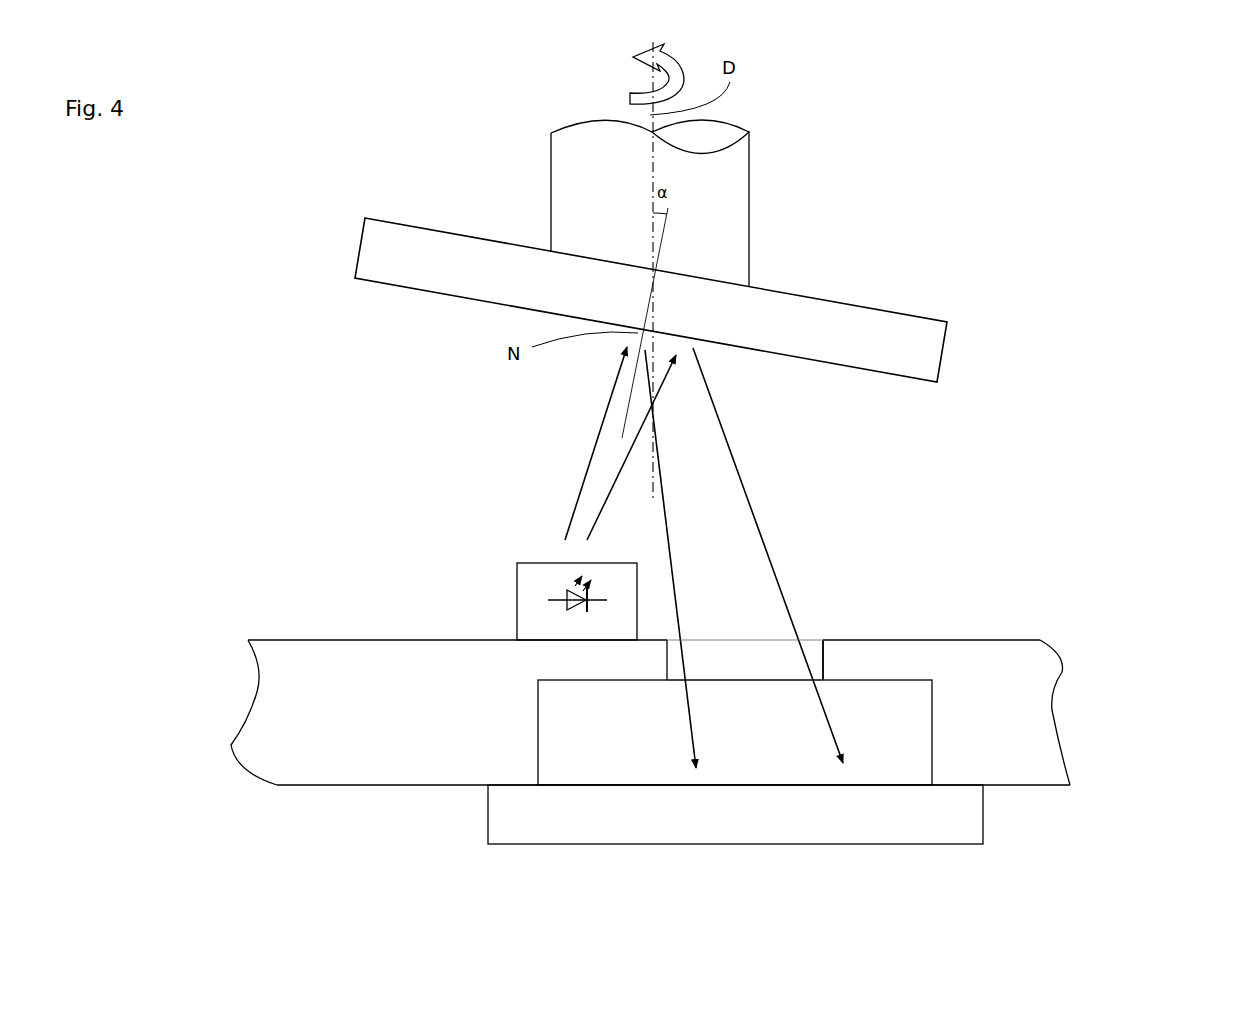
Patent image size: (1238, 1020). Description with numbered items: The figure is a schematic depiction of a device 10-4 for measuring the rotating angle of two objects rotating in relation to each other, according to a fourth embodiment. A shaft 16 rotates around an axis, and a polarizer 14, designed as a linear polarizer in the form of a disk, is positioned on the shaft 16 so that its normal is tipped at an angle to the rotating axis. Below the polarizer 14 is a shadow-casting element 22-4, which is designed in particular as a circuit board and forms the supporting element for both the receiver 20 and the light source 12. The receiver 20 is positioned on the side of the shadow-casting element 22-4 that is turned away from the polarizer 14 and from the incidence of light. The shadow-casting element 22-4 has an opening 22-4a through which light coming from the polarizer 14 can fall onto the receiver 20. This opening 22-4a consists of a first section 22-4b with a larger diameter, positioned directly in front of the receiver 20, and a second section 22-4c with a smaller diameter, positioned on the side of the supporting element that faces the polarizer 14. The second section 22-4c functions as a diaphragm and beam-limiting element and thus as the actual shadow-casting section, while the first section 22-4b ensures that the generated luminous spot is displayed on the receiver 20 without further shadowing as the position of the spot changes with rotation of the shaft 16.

The device 10-4 is at (925, 167).
The shaft 16 is at (725, 238).
The polarizer 14 is at (923, 355).
The light source 12 is at (519, 610).
The shadow-casting element 22-4 is at (1008, 657).
The opening 22-4a is at (822, 647).
The first section 22-4b is at (888, 737).
The second section 22-4c is at (763, 650).
The receiver 20 is at (958, 832).